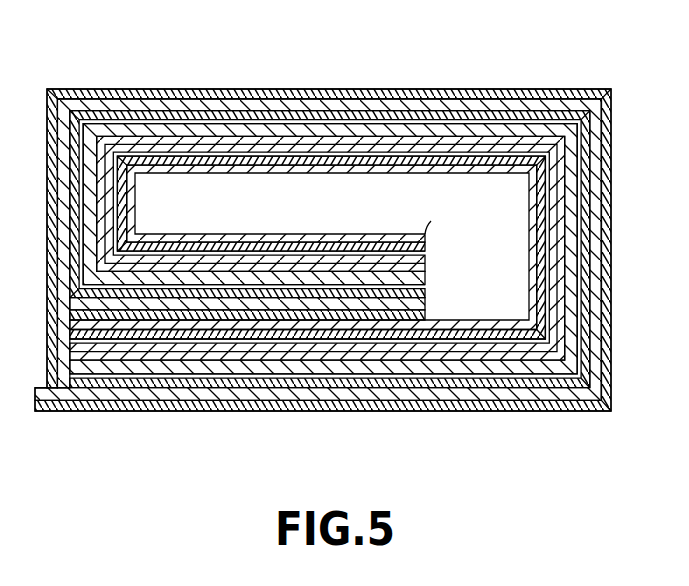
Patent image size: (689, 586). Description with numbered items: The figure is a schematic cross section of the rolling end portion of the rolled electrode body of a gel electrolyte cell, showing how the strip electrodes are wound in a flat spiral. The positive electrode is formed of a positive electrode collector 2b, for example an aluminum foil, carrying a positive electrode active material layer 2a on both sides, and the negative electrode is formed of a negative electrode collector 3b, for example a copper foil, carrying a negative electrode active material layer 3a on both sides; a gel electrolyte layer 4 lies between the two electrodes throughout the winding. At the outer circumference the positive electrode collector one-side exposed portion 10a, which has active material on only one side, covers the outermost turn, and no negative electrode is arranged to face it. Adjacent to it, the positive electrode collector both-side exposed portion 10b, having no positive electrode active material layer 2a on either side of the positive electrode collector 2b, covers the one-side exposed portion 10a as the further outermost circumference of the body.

The positive electrode active material layer 2a is at (145, 122).
The positive electrode collector 2b is at (113, 97).
The negative electrode active material layer 3a is at (263, 163).
The negative electrode collector 3b is at (211, 153).
The gel electrolyte layer 4 is at (232, 132).
The positive electrode collector one-side exposed portion 10a is at (486, 106).
The positive electrode collector both-side exposed portion 10b is at (388, 88).